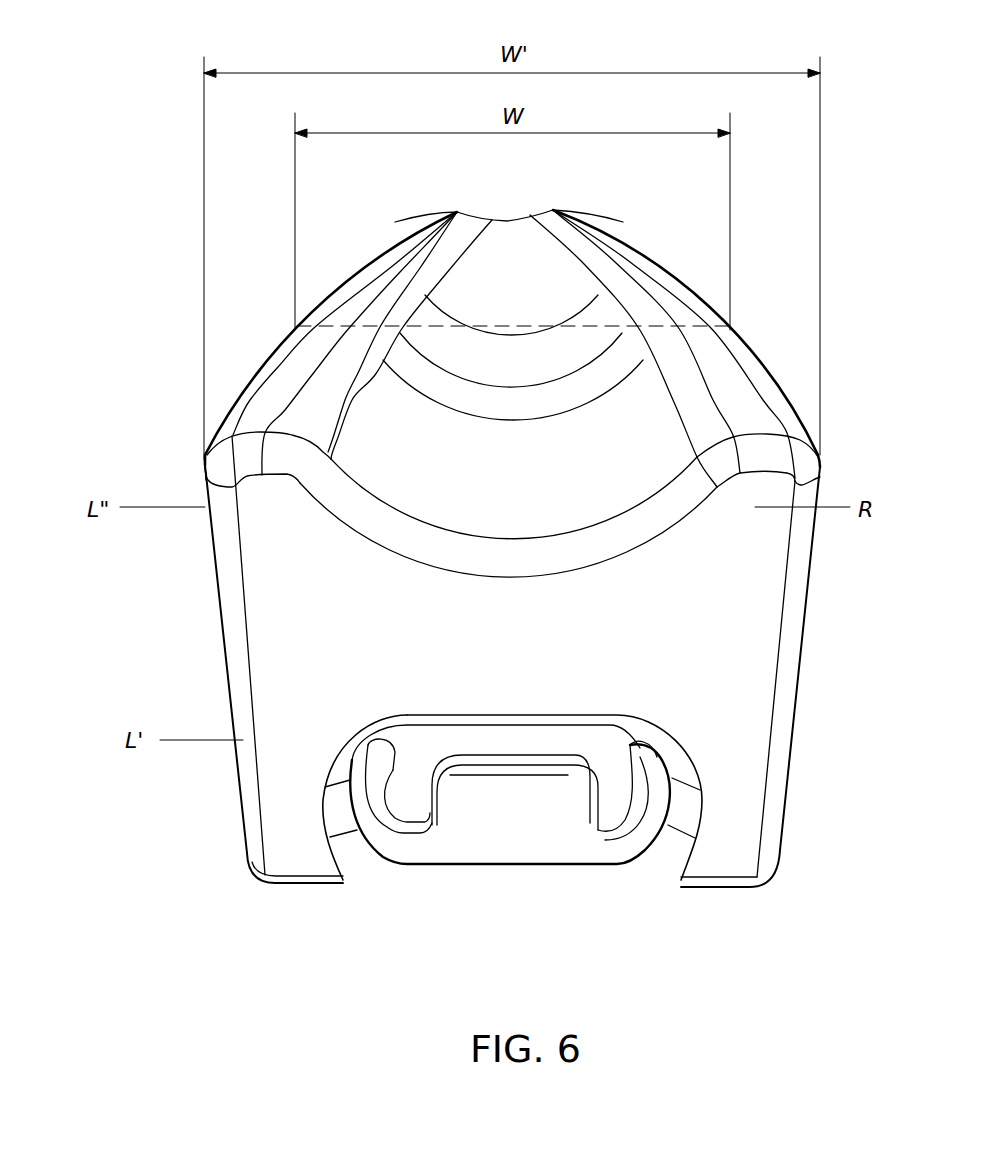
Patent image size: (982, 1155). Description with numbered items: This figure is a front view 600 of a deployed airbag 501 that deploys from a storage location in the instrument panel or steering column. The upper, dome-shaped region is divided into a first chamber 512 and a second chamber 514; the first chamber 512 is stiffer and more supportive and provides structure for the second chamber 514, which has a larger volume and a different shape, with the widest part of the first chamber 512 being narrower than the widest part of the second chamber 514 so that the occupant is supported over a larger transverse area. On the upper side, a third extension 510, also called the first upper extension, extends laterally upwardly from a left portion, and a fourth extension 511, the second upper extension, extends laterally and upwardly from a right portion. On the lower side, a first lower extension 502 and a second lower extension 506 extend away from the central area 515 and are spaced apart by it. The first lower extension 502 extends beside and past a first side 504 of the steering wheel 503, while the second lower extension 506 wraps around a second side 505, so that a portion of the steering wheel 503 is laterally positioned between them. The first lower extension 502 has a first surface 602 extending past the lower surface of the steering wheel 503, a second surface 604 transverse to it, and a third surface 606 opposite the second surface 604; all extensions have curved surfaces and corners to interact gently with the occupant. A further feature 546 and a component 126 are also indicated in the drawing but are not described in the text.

The front view 600 is at (140, 166).
The airbag 501 is at (267, 343).
The third extension 510 is at (262, 472).
The fourth extension 511 is at (777, 453).
The first chamber 512 is at (422, 316).
The second chamber 514 is at (638, 475).
The central area 515 is at (543, 655).
The dome ridges 546 is at (674, 330).
The first lower extension 502 is at (279, 910).
The steering wheel 503 is at (514, 815).
The first side of the steering wheel 504 is at (395, 862).
The second side of the steering wheel 505 is at (640, 858).
The second lower extension 506 is at (727, 853).
The clip base 126 is at (570, 866).
The first surface 602 is at (298, 856).
The second surface 604 is at (245, 853).
The third surface 606 is at (357, 858).